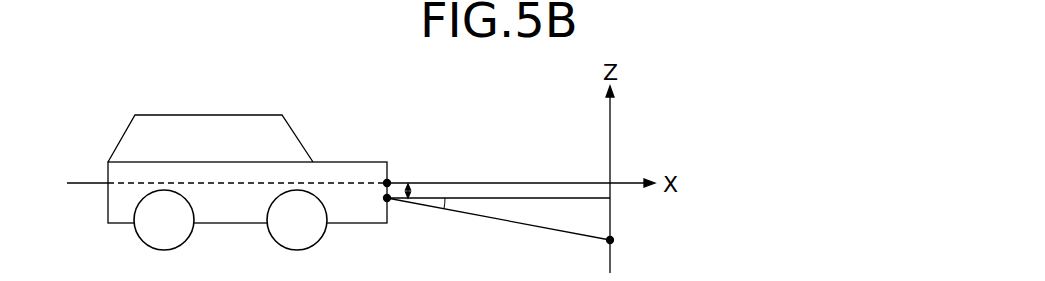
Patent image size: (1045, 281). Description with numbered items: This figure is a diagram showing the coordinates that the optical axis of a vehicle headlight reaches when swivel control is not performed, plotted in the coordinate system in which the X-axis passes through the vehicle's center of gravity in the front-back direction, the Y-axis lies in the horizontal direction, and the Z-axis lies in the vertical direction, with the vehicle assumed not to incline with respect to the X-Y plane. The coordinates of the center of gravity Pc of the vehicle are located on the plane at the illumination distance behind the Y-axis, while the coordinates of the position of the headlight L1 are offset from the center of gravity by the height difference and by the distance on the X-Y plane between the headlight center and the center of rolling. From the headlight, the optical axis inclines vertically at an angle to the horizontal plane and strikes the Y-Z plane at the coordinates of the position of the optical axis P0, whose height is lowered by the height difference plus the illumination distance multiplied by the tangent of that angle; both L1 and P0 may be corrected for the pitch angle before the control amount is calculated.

The coordinates of the center of gravity Pc is at (482, 168).
The coordinates of the position of the headlight L1 is at (497, 232).
The coordinates of the position of the optical axis P0 is at (732, 242).